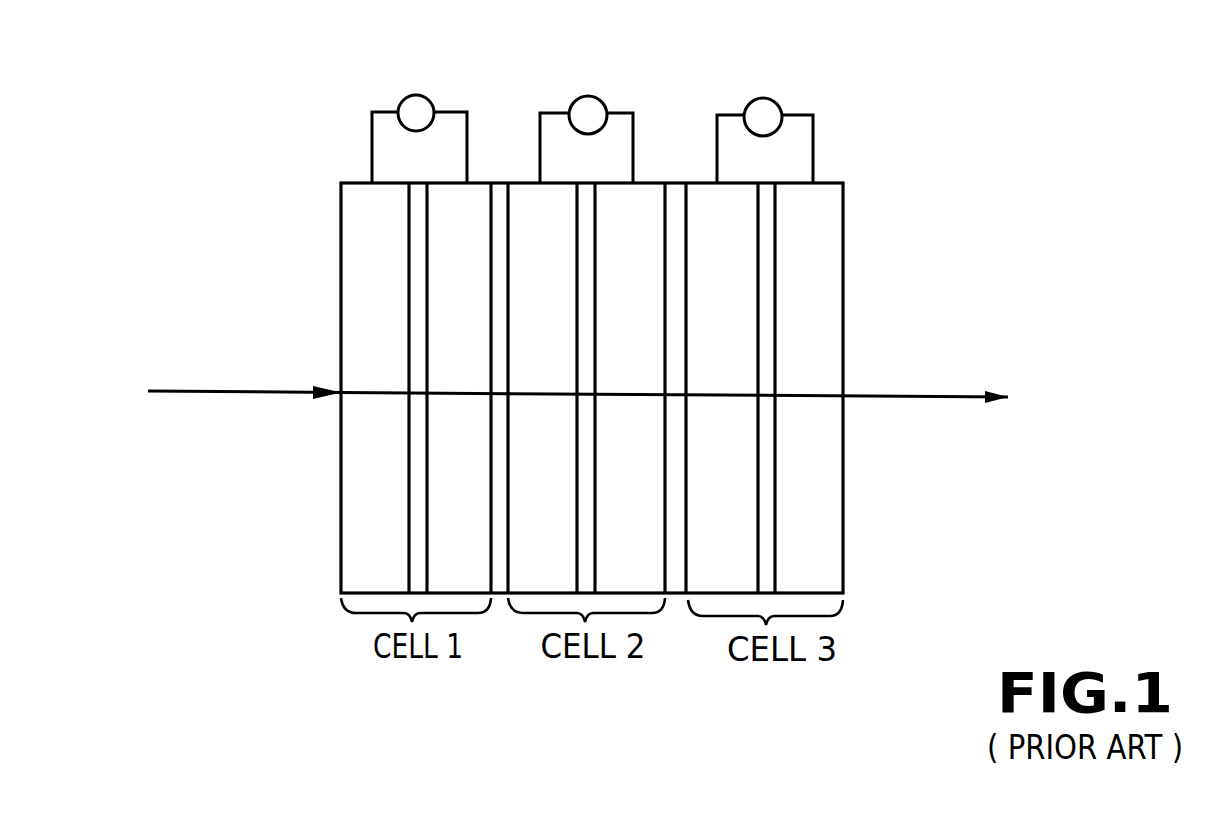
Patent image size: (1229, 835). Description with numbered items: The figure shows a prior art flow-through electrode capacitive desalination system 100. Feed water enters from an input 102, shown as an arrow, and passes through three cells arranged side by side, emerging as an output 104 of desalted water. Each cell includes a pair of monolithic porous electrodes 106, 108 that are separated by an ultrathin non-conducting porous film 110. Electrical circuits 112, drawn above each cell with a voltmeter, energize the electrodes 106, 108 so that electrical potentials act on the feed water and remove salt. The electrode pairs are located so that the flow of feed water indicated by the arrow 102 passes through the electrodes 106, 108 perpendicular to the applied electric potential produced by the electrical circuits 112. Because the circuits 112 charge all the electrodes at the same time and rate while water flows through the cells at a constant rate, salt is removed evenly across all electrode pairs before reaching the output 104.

The prior art system 100 is at (964, 72).
The input 102 is at (226, 391).
The output 104 is at (939, 396).
The monolithic porous electrode 106 is at (384, 498).
The monolithic porous electrode 108 is at (473, 496).
The ultrathin non-conducting porous film 110 is at (590, 200).
The electrical circuit 112 is at (419, 95).